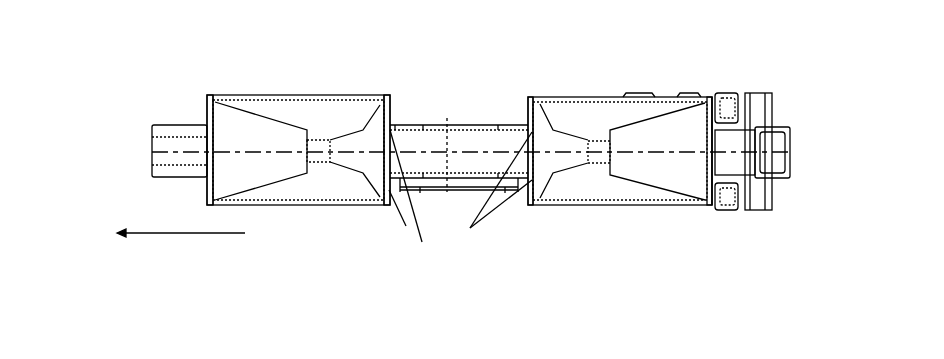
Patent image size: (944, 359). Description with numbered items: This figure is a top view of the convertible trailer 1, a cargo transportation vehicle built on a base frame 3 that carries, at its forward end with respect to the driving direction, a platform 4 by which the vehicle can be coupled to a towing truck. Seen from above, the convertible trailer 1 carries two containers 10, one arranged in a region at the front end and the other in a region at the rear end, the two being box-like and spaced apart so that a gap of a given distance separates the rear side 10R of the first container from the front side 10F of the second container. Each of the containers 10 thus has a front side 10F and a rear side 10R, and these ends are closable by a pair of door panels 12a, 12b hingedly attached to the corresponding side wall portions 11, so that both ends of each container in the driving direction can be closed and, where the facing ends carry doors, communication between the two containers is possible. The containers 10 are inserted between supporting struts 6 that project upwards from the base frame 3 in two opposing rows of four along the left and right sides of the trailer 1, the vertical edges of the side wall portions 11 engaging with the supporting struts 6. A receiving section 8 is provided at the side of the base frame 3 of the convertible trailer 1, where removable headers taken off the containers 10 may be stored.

The convertible trailer 1 is at (572, 232).
The base frame 3 is at (468, 125).
The platform 4 is at (177, 150).
The supporting struts 6 is at (207, 95).
The receiving section 8 is at (458, 192).
The containers 10 is at (295, 92).
The front side 10F is at (196, 193).
The rear side 10R is at (397, 112).
The side wall portions 11 is at (240, 100).
The door panel 12a is at (428, 194).
The door panel 12b is at (501, 180).